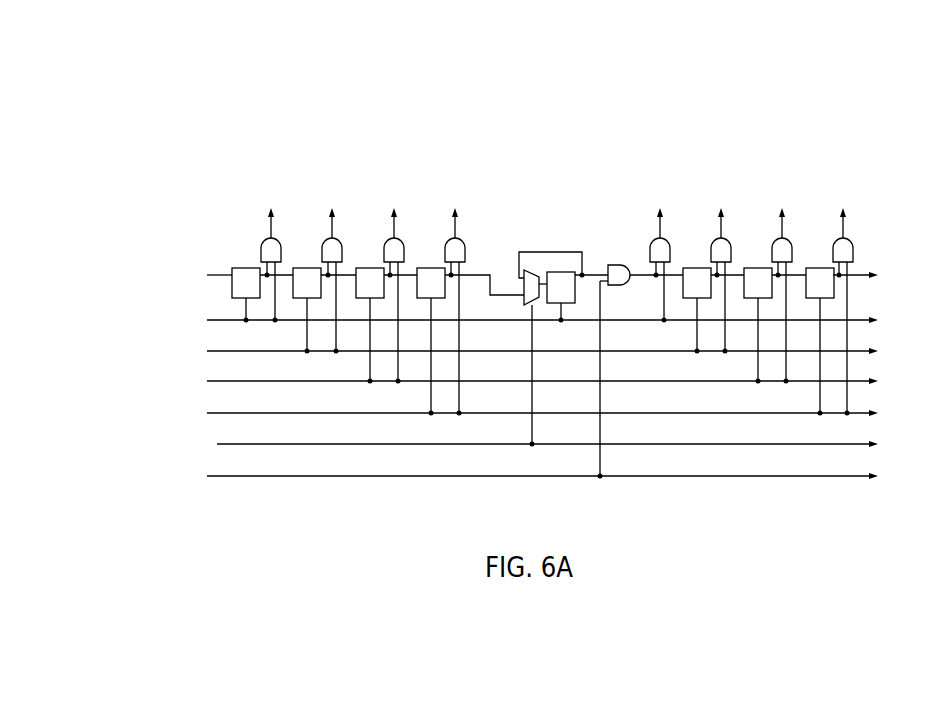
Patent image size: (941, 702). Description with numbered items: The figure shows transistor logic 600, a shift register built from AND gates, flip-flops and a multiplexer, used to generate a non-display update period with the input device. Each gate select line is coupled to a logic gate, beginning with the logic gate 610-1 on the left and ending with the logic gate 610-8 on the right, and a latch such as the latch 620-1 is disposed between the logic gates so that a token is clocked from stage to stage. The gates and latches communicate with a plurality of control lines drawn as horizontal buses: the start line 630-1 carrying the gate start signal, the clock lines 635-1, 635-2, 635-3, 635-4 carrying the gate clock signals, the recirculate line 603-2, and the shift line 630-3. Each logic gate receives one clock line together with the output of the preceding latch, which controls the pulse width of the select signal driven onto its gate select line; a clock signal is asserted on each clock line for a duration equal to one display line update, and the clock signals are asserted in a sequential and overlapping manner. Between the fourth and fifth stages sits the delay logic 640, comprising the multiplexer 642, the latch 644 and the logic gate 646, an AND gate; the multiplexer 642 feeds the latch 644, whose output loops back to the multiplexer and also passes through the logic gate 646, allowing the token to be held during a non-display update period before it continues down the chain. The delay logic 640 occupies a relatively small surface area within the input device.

The transistor logic 600 is at (192, 136).
The logic gate 610-1 is at (263, 245).
The latch 620-1 is at (236, 267).
The start line 630-1 is at (150, 273).
The clock line 635-1 is at (150, 318).
The clock line 635-2 is at (150, 349).
The clock line 635-3 is at (150, 379).
The clock line 635-4 is at (150, 411).
The recirculate signal line RECIRC 603-2 is at (150, 442).
The shift line 630-3 is at (150, 474).
The delay logic 640 is at (580, 236).
The multiplexer 642 is at (530, 269).
The latch 644 is at (557, 271).
The logic gate 646 is at (613, 264).
The logic gate 610-8 is at (848, 240).